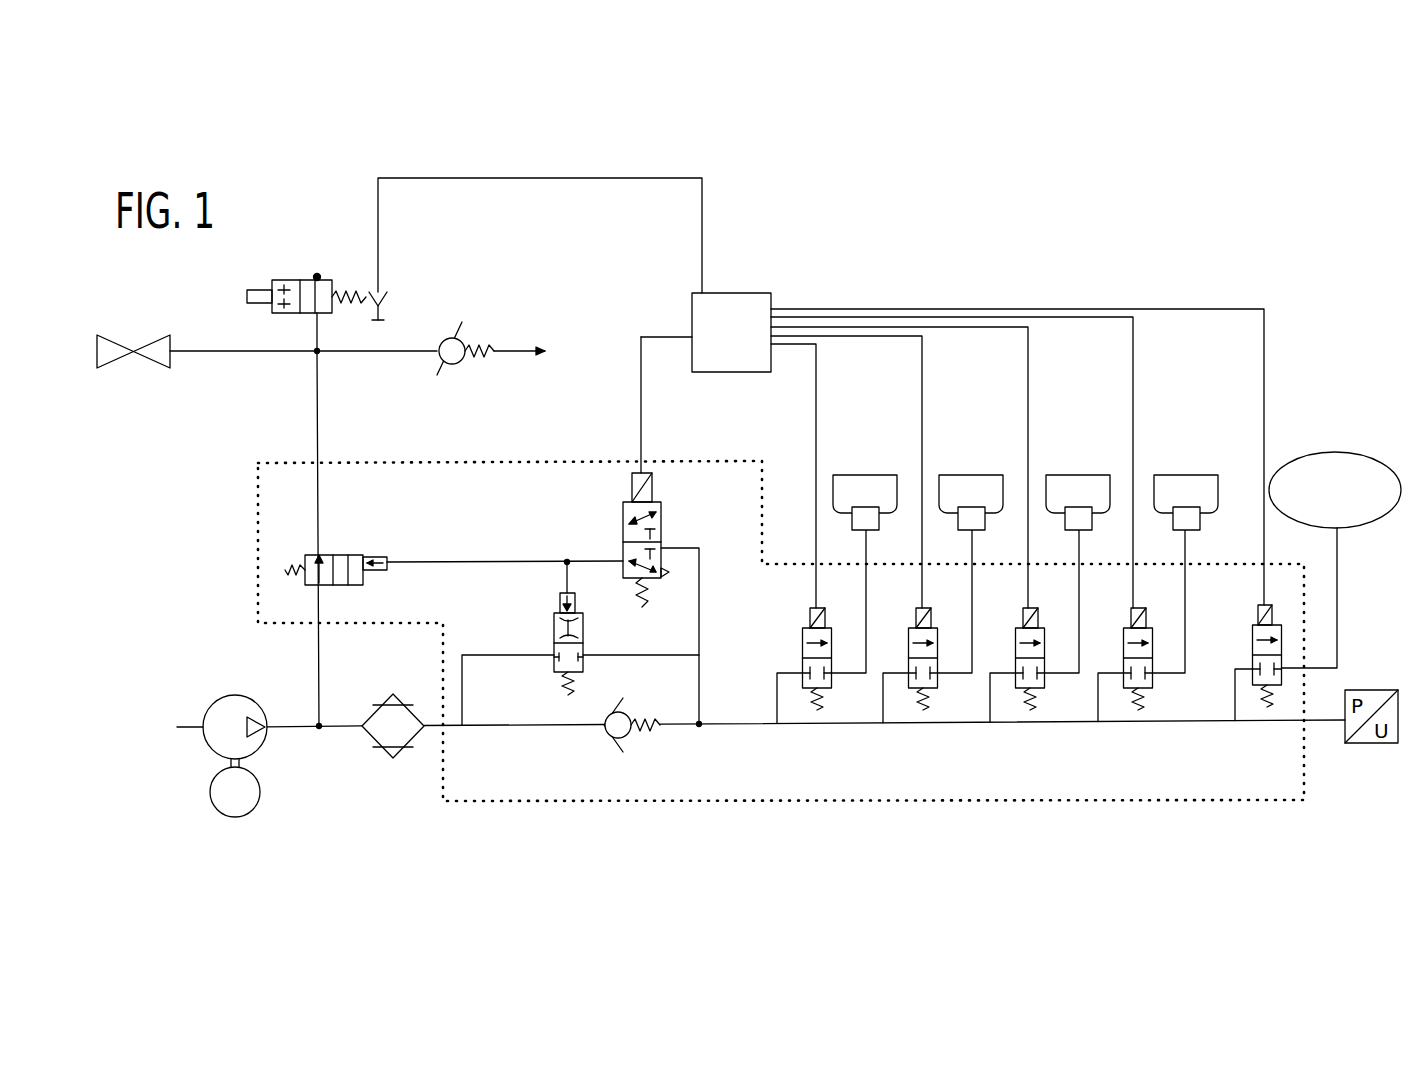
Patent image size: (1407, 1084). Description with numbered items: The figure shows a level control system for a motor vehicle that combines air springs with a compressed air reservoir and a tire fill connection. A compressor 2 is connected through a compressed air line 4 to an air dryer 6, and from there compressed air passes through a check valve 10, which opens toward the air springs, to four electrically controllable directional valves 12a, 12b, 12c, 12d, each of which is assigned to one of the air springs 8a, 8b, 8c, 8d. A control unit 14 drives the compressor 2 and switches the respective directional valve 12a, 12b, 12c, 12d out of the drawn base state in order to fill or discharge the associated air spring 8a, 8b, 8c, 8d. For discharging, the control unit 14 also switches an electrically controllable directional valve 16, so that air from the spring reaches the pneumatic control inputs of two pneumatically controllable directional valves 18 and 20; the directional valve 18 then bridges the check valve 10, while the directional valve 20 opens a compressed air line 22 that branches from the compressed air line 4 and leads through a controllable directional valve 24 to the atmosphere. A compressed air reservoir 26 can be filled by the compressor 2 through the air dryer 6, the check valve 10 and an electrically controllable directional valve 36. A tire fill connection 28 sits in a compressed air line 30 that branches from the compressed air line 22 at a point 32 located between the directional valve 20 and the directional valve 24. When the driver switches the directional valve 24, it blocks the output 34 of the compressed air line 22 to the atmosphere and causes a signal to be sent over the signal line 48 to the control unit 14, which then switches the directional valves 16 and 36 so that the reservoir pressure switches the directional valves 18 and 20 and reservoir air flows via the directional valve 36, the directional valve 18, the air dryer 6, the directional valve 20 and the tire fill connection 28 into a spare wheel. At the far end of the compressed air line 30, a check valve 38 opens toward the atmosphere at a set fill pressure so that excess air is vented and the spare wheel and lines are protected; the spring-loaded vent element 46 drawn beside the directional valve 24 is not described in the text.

The compressor 2 is at (215, 705).
The compressed air line 4 is at (303, 730).
The air dryer 6 is at (379, 740).
The air spring 8a is at (888, 499).
The air spring 8b is at (994, 499).
The air spring 8c is at (1101, 499).
The air spring 8d is at (1214, 499).
The check valve 10 is at (618, 740).
The electrically controllable directional valve 12a is at (822, 608).
The electrically controllable directional valve 12b is at (928, 608).
The electrically controllable directional valve 12c is at (1035, 608).
The electrically controllable directional valve 12d is at (1142, 608).
The control unit 14 is at (710, 305).
The electrically controllable directional valve 16 is at (663, 527).
The pneumatically controllable directional valve 18 is at (583, 645).
The pneumatically controllable directional valve 20 is at (342, 555).
The compressed air line 22 is at (317, 655).
The controllable directional valve 24 is at (327, 280).
The compressed air reservoir 26 is at (1323, 452).
The tire fill connection 28 is at (113, 365).
The compressed air line 30 is at (192, 350).
The point 32 is at (322, 345).
The output 34 is at (317, 277).
The electrically controllable directional valve 36 is at (1256, 684).
The check valve 38 is at (465, 333).
The vent 46 is at (388, 291).
The signal line 48 is at (589, 178).